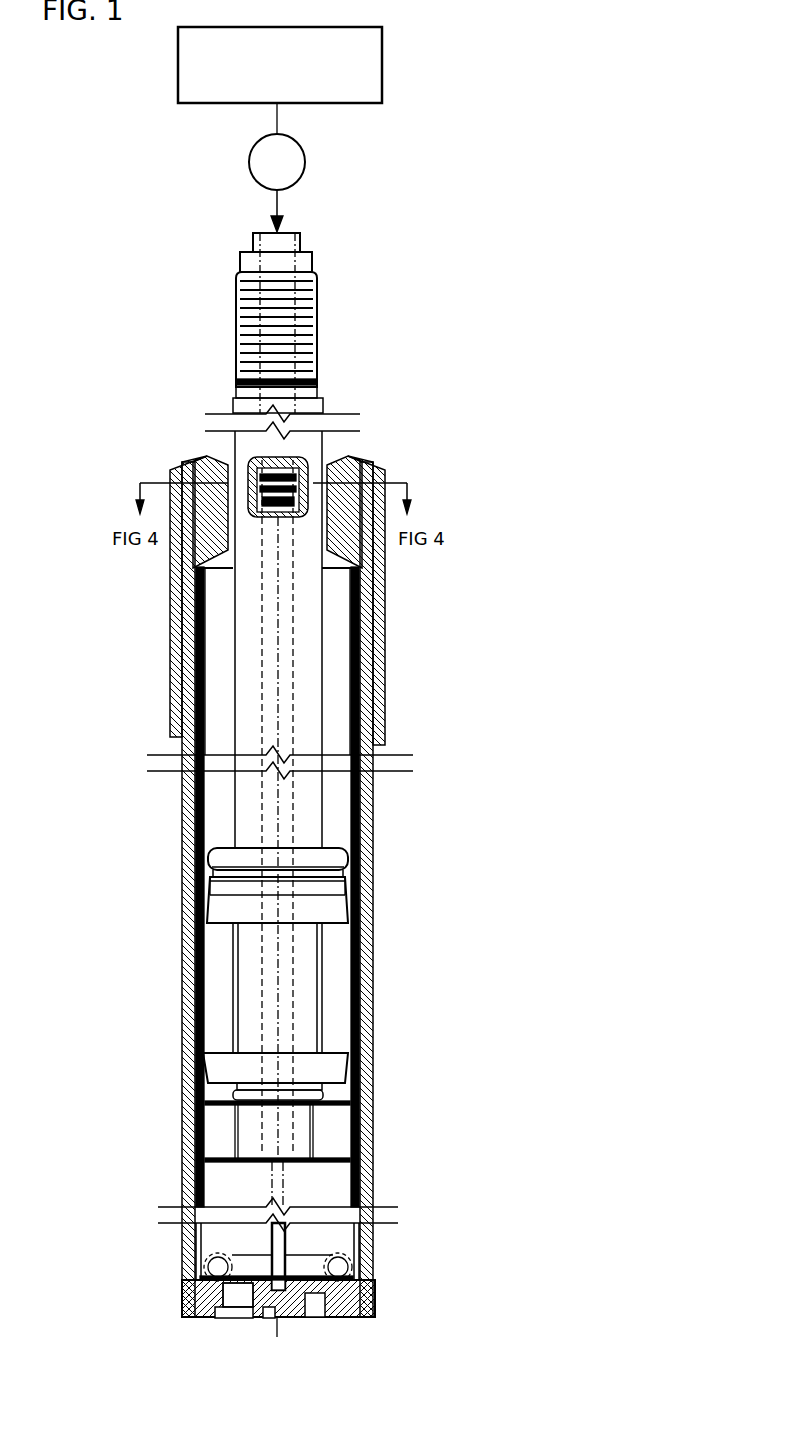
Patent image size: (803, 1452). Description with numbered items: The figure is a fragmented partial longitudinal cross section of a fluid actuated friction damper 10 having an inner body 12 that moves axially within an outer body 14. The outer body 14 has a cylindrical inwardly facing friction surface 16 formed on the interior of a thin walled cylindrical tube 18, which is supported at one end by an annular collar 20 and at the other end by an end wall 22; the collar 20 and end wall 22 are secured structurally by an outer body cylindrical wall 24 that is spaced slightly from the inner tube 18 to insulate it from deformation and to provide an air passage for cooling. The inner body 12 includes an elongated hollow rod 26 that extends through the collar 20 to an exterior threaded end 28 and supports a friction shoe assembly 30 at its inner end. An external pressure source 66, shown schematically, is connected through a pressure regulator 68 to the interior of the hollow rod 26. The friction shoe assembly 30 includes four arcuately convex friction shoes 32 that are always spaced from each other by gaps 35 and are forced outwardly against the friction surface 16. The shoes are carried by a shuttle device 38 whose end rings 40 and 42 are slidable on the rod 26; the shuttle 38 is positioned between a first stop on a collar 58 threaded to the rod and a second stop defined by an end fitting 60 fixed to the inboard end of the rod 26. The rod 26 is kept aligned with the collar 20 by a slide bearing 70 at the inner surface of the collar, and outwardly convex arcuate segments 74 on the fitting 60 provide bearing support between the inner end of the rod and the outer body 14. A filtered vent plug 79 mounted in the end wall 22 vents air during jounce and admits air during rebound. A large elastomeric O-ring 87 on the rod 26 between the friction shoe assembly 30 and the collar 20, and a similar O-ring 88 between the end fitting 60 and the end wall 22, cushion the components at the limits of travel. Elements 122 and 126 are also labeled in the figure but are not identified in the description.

The external pressure source 66 is at (363, 72).
The pressure regulator 68 is at (305, 162).
The exterior threaded end 28 is at (318, 307).
The fluid actuated friction damper 10 is at (368, 410).
The air passage 126 is at (245, 475).
The slide bearing 70 is at (312, 468).
The annular collar 20 is at (213, 453).
The outer body 14 is at (382, 748).
The air tube 122 is at (272, 618).
The hollow rod 26 is at (248, 690).
The inner body 12 is at (225, 833).
The thin walled cylindrical tube 18 is at (335, 818).
The friction surface 16 is at (340, 818).
The elastomeric O-ring 87 is at (218, 862).
The collar 58 is at (213, 880).
The end ring 40 is at (333, 907).
The friction shoe assembly 30 is at (340, 945).
The outer body cylindrical wall 24 is at (180, 992).
The friction shoes 32 is at (335, 992).
The gaps 35 is at (322, 1004).
The shuttle device 38 is at (356, 1076).
The end ring 42 is at (223, 1068).
The arcuate segments 74 is at (340, 1145).
The end fitting 60 is at (328, 1168).
The O-ring 88 is at (333, 1263).
The filtered vent plug 79 is at (238, 1300).
The end wall 22 is at (345, 1320).